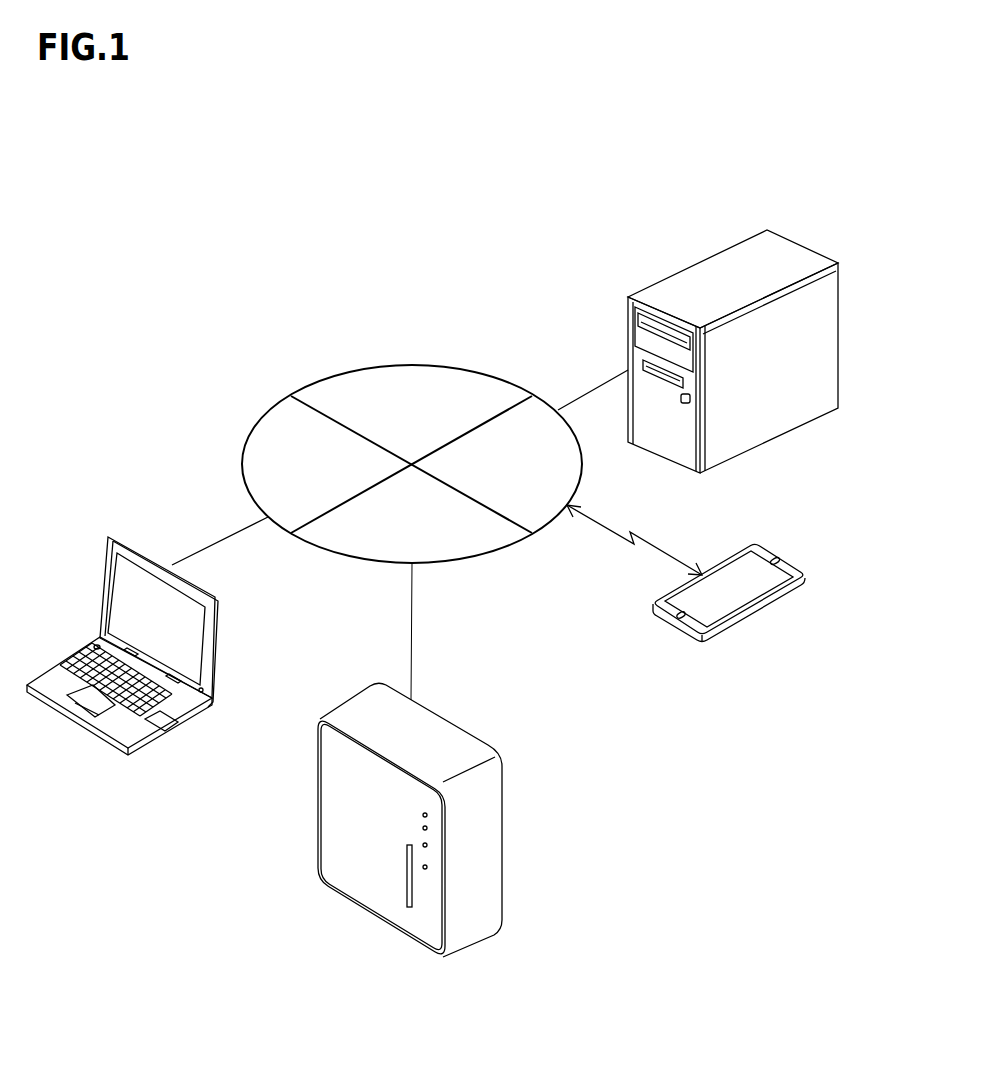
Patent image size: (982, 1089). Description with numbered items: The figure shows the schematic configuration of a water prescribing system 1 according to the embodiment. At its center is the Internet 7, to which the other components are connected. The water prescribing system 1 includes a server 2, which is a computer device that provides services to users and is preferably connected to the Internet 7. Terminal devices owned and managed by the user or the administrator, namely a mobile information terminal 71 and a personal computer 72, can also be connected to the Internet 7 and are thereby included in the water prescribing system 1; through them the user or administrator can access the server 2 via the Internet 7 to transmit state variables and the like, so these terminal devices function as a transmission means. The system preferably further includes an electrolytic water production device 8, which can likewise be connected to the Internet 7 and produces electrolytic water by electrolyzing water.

The water prescribing system 1 is at (573, 170).
The Internet 7 is at (412, 365).
The server 2 is at (770, 443).
The mobile information terminal 71 is at (755, 613).
The personal computer 72 is at (105, 738).
The electrolytic water production device 8 is at (477, 882).